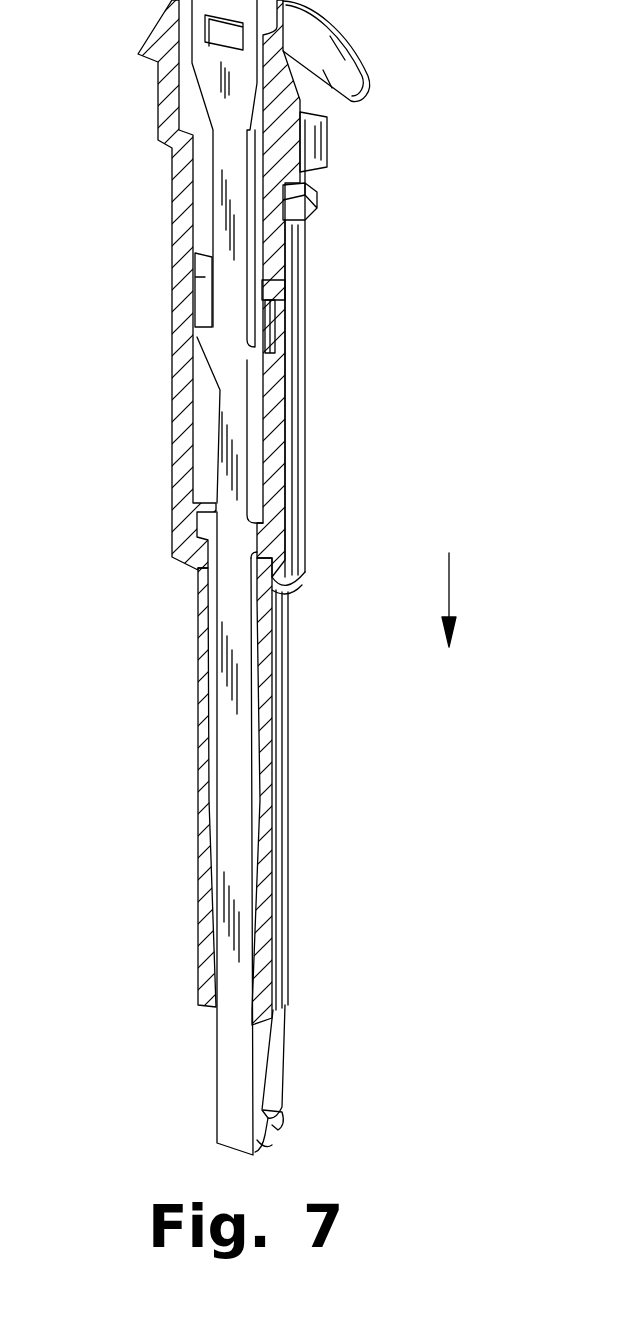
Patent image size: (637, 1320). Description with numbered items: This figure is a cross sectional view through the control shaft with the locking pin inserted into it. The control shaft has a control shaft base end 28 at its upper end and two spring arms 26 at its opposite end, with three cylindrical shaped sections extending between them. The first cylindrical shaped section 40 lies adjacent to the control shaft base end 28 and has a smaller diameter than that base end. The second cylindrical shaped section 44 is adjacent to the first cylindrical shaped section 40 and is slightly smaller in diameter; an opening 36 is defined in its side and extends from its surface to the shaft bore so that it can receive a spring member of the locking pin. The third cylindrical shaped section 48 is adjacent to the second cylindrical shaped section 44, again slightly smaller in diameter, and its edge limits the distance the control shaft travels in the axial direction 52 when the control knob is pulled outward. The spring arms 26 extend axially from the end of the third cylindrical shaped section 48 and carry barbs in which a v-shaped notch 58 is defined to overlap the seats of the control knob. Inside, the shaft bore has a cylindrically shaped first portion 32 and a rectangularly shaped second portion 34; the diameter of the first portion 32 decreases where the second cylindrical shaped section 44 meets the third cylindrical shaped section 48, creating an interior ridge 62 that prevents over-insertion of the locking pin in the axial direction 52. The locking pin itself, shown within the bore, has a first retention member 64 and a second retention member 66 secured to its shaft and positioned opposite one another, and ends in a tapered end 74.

The spring arms 26 is at (282, 1062).
The control shaft base end 28 is at (350, 46).
The first portion of the shaft bore 32 is at (138, 2).
The second portion of the shaft bore 34 is at (140, 790).
The opening 36 is at (287, 333).
The first cylindrical shaped section 40 is at (330, 150).
The second cylindrical shaped section 44 is at (307, 487).
The third cylindrical shaped section 48 is at (275, 780).
The axial direction 52 is at (450, 592).
The v-shaped notch 58 is at (273, 1117).
The interior ridge 62 is at (307, 573).
The first retention member 64 is at (280, 287).
The second retention member 66 is at (190, 265).
The tapered end 74 is at (257, 1143).